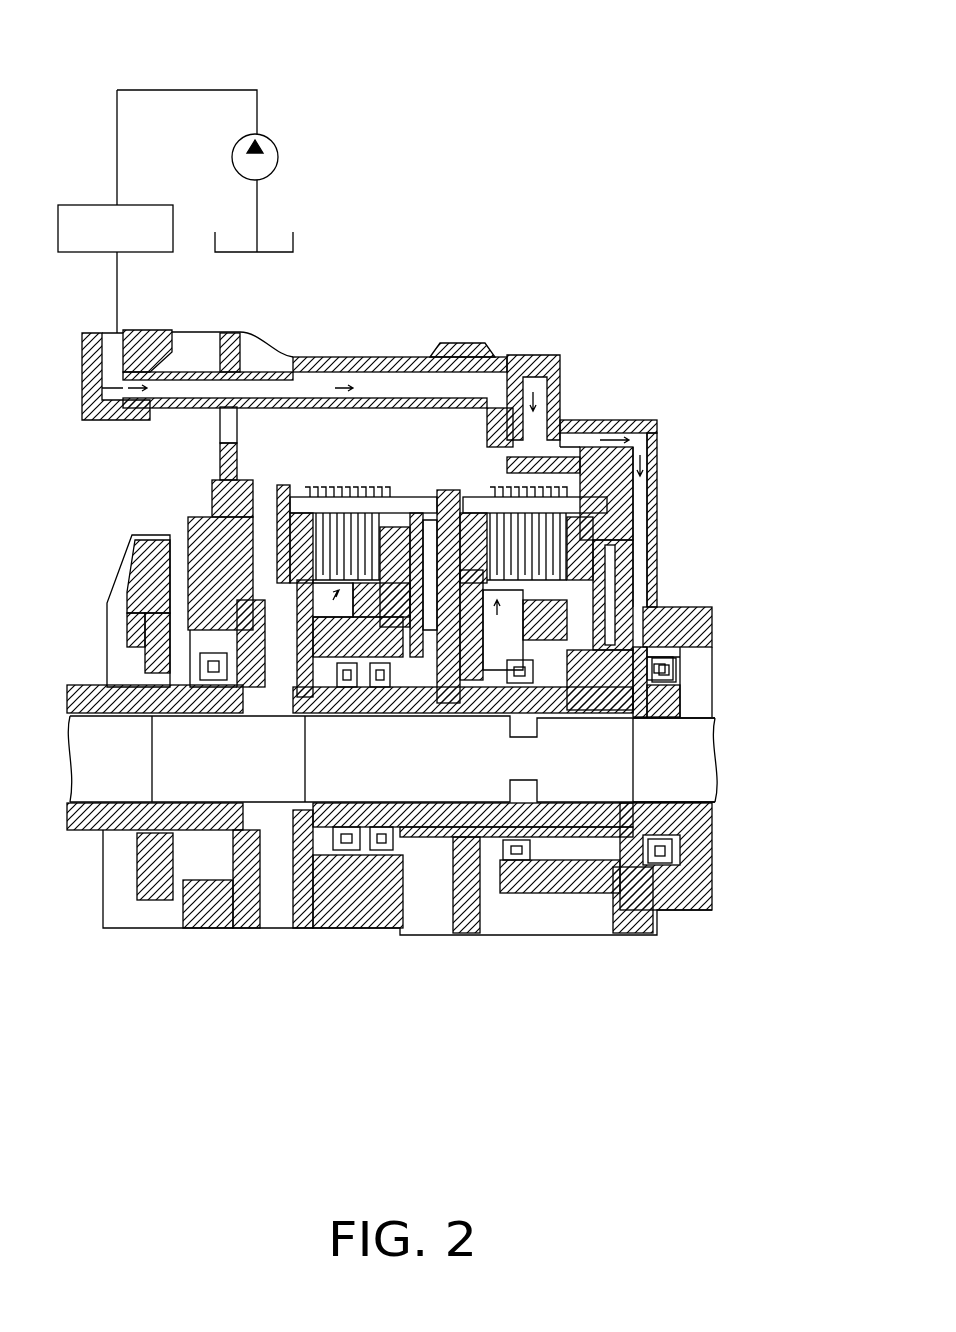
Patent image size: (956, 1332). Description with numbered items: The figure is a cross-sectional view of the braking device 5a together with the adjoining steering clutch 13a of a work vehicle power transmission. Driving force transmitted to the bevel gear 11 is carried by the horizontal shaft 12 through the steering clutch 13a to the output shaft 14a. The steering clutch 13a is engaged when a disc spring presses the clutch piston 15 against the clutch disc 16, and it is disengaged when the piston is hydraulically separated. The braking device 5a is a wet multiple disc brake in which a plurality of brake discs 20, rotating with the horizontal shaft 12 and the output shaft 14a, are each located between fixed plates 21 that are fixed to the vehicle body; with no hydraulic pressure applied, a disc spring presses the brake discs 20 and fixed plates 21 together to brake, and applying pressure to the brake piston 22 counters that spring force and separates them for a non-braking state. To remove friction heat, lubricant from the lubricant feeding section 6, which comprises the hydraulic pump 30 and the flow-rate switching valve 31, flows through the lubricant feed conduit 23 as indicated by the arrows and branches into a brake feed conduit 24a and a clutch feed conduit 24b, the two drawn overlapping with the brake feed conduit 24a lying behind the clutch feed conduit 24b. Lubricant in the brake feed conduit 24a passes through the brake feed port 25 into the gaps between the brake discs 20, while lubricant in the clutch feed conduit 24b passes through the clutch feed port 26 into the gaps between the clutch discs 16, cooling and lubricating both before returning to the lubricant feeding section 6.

The lubricant feeding section 6 is at (292, 91).
The hydraulic pump 30 is at (278, 152).
The flow-rate switching valve 31 is at (152, 205).
The lubricant feed conduit 23 is at (397, 380).
The fixed plates 21 is at (563, 458).
The clutch feed conduit 24b is at (691, 473).
The brake feed conduit 24a is at (643, 507).
The brake piston 22 is at (633, 568).
The steering clutch 13a is at (293, 482).
The clutch disc 16 is at (357, 539).
The clutch piston 15 is at (385, 512).
The braking device 5a is at (452, 493).
The brake discs 20 is at (503, 513).
The bevel gear 11 is at (123, 563).
The horizontal shaft 12 is at (265, 777).
The clutch feed port 26 is at (345, 712).
The brake feed port 25 is at (493, 613).
The output shaft 14a is at (685, 777).